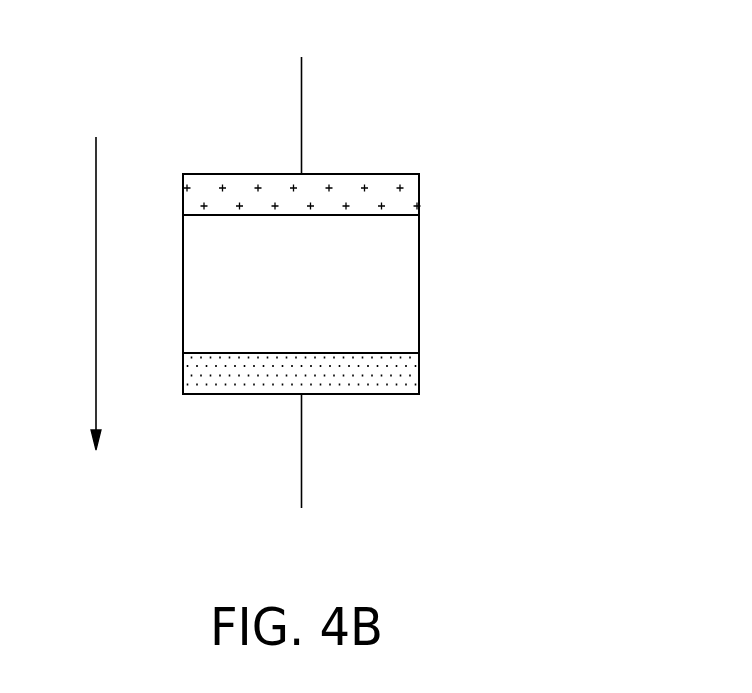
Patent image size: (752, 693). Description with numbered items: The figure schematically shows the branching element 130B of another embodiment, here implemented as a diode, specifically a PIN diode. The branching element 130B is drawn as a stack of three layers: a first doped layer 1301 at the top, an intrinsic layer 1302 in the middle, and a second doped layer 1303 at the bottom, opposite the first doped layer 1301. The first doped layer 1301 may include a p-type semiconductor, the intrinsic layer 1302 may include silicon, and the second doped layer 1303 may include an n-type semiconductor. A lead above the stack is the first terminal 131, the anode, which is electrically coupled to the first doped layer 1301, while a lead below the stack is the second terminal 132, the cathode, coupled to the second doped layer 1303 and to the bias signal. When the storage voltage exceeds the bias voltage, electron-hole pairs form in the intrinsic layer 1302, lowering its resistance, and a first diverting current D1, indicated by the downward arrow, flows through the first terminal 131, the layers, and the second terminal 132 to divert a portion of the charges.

The branching element 130B is at (650, 548).
The first doped layer 1301 is at (410, 194).
The intrinsic layer 1302 is at (410, 282).
The second doped layer 1303 is at (410, 379).
The first terminal 131 is at (302, 97).
The second terminal 132 is at (302, 470).
The first diverting current D1 is at (80, 293).